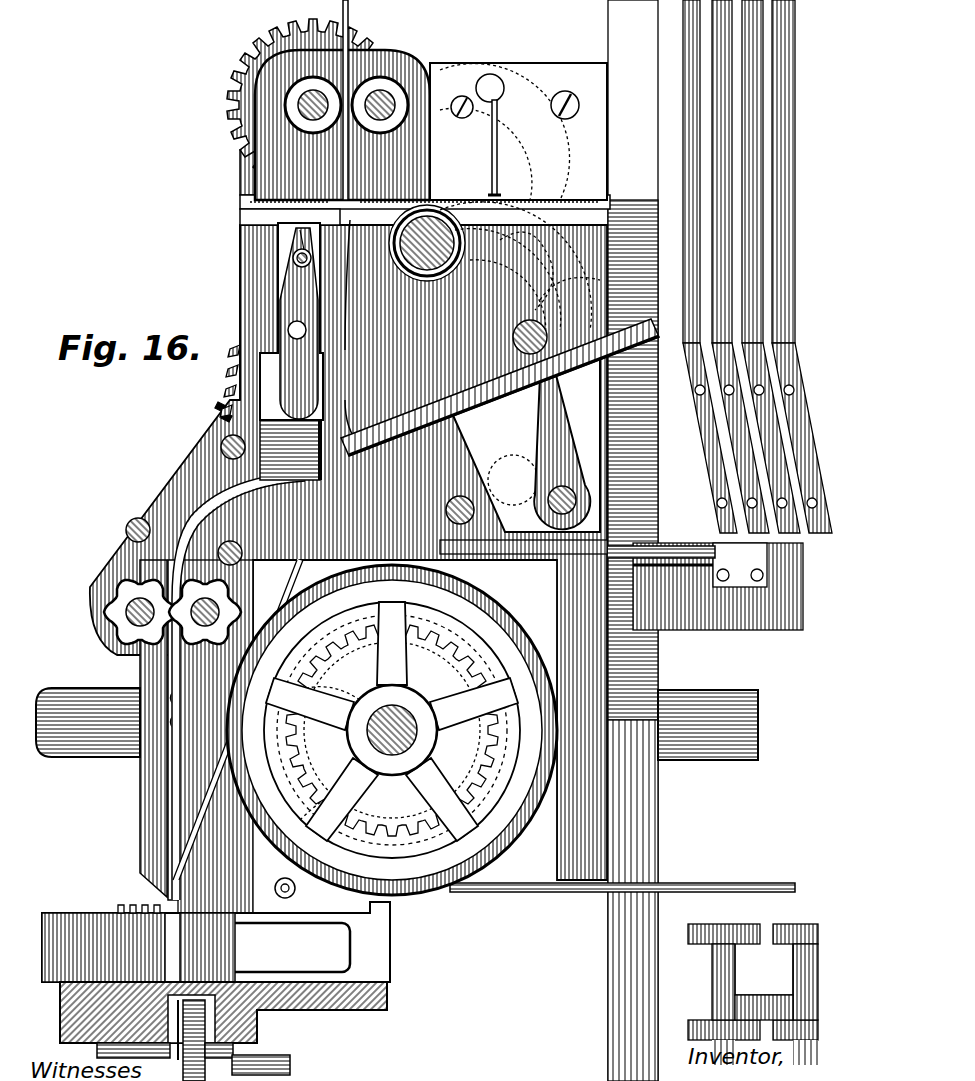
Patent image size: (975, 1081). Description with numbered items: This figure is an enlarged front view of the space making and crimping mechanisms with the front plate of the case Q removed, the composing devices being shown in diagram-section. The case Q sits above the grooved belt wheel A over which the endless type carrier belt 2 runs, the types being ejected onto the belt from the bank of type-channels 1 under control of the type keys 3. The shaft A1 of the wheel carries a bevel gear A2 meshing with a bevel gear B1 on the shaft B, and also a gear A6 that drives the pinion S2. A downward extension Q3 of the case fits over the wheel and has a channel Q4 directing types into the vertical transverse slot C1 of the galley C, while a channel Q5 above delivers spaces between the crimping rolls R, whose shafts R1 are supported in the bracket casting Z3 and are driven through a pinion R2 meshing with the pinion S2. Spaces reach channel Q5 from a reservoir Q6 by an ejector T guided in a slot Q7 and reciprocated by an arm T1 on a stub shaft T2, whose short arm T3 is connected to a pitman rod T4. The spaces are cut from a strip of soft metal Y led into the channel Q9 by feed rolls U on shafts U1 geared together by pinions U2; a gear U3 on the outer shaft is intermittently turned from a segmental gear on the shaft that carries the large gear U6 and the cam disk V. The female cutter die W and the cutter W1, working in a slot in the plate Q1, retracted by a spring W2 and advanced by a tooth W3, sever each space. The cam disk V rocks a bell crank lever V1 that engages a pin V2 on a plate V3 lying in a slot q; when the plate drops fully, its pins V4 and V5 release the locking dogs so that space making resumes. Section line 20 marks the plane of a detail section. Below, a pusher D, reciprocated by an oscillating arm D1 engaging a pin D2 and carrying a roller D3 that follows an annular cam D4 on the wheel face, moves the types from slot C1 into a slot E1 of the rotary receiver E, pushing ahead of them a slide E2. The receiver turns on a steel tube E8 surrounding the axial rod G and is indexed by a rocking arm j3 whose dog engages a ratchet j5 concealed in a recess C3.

The bank of type-channels 1 is at (785, 245).
The endless type carrier belt 2 is at (745, 886).
The type keys 3 is at (755, 928).
The section line 20 is at (265, 455).
The strip of soft metal Y is at (348, 12).
The feed rolls U is at (385, 80).
The feed roll shafts U1 is at (388, 118).
The pinions U2 is at (300, 105).
The gear U3 is at (250, 68).
The large gear U6 is at (555, 145).
The female cutter die W is at (425, 193).
The cutter W1 is at (498, 180).
The spring W2 is at (490, 160).
The tooth W3 is at (393, 233).
The case Q is at (226, 312).
The plate Q1 is at (256, 182).
The downward extension Q3 is at (152, 840).
The channel Q4 is at (195, 823).
The channel Q5 is at (318, 380).
The reservoir Q6 is at (168, 775).
The slot Q7 is at (498, 370).
The channel Q9 is at (350, 280).
The slot q is at (290, 240).
The cam disk V is at (470, 255).
The bell crank lever V1 is at (566, 286).
The pin V2 is at (288, 330).
The plate V3 is at (275, 380).
The pin V4 is at (293, 260).
The pin V5 is at (322, 226).
The ejector T is at (570, 352).
The arm T1 is at (562, 452).
The stub shaft T2 is at (572, 512).
The short arm T3 is at (533, 462).
The pitman rod T4 is at (470, 512).
The pinion S2 is at (216, 410).
The crimping rolls R is at (184, 612).
The crimping roll shafts R1 is at (126, 612).
The pinion R2 is at (125, 538).
The belt wheel A is at (392, 730).
The shaft A1 is at (392, 721).
The bevel gear A2 is at (382, 835).
The gear A6 is at (392, 730).
The shaft B is at (96, 700).
The bevel gear B1 is at (392, 730).
The pusher D is at (216, 942).
The oscillating arm D1 is at (320, 809).
The pin D2 is at (296, 888).
The roller D3 is at (330, 698).
The annular cam D4 is at (300, 693).
The bracket casting Z3 is at (565, 592).
The galley C is at (345, 1000).
The slot C1 is at (180, 955).
The recess C3 is at (220, 995).
The type-line receiver E is at (95, 1015).
The slots E1 is at (72, 990).
The slide E2 is at (90, 928).
The steel tube E8 is at (110, 1048).
The rod G is at (290, 1062).
The rocking arm j3 is at (197, 1050).
The ratchet j5 is at (175, 1050).